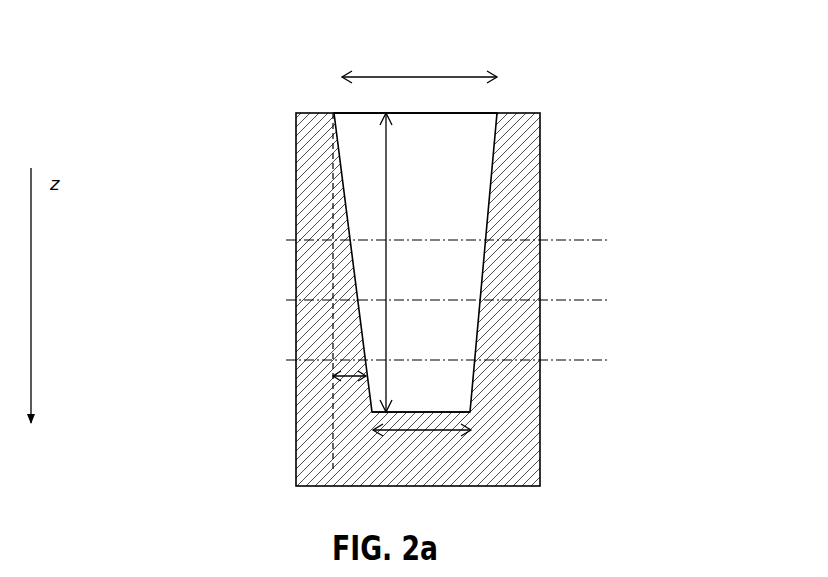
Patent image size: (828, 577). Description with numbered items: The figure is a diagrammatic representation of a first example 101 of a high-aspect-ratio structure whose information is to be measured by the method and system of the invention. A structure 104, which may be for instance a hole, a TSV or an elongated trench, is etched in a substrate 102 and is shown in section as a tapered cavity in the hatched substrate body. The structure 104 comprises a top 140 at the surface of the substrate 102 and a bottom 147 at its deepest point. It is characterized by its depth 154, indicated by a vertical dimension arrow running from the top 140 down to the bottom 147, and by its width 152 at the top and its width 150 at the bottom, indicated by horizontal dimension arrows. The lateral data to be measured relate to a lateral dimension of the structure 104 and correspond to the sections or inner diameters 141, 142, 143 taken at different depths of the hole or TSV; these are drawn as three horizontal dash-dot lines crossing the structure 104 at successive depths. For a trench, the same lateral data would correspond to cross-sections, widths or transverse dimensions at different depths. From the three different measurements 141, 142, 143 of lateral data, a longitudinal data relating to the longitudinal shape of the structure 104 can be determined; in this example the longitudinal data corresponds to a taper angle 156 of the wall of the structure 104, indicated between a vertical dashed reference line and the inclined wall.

The first example 101 is at (140, 73).
The substrate 102 is at (294, 207).
The structure 104 is at (355, 129).
The top 140 is at (354, 113).
The inner diameter 141 is at (577, 240).
The inner diameter 142 is at (580, 300).
The inner diameter 143 is at (577, 360).
The bottom 147 is at (442, 412).
The width at the bottom 150 is at (425, 432).
The width at the top 152 is at (455, 77).
The depth 154 is at (387, 138).
The taper angle 156 is at (335, 377).